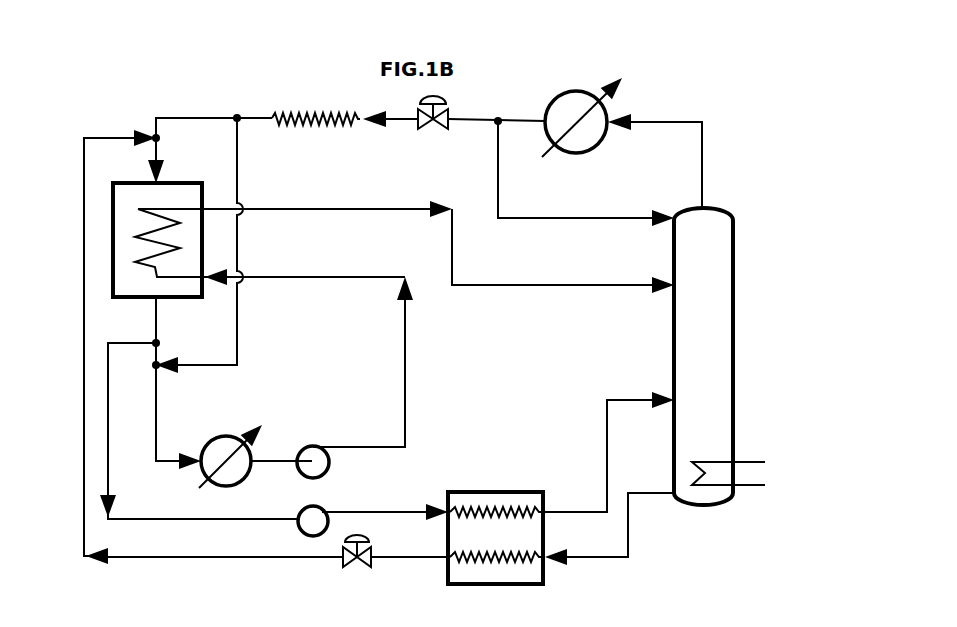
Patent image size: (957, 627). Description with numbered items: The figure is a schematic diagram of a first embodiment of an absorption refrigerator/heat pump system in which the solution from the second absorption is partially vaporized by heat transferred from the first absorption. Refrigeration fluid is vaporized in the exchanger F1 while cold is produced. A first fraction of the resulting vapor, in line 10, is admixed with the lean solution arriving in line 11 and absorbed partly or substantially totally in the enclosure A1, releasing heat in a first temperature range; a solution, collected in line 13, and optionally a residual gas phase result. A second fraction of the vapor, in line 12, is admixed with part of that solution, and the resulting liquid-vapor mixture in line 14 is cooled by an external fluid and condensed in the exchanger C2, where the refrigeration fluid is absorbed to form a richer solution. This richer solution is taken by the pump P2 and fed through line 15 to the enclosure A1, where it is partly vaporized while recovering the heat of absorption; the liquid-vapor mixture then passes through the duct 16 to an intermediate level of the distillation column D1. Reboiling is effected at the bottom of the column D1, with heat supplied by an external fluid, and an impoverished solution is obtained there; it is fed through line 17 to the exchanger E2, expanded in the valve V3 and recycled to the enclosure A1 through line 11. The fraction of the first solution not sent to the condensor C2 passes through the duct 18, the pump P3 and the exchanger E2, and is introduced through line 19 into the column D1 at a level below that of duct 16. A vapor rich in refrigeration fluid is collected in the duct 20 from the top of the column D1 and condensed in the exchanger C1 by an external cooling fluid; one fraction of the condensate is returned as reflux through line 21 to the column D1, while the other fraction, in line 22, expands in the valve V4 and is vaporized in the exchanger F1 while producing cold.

The vapor phase line 10 is at (187, 115).
The lean solution line 11 is at (117, 135).
The second vapor fraction line 12 is at (240, 155).
The solution S1 line 13 is at (157, 331).
The liquid-vapor mixture line 14 is at (155, 464).
The solution S2 line 15 is at (303, 276).
The liquid-vapor mixture duct 16 is at (371, 211).
The impoverished solution line 17 is at (628, 548).
The solution S1 duct 18 is at (190, 517).
The column feed line 19 is at (607, 462).
The overhead vapor duct 20 is at (702, 178).
The reflux line 21 is at (542, 216).
The condensate line 22 is at (470, 122).
The enclosure A1 is at (176, 182).
The exchanger C1 is at (602, 143).
The exchanger C2 is at (219, 436).
The distillation column D1 is at (674, 343).
The exchanger E2 is at (495, 491).
The exchanger F1 is at (320, 124).
The pump P2 is at (313, 446).
The pump P3 is at (306, 506).
The valve V3 is at (357, 569).
The valve V4 is at (432, 131).